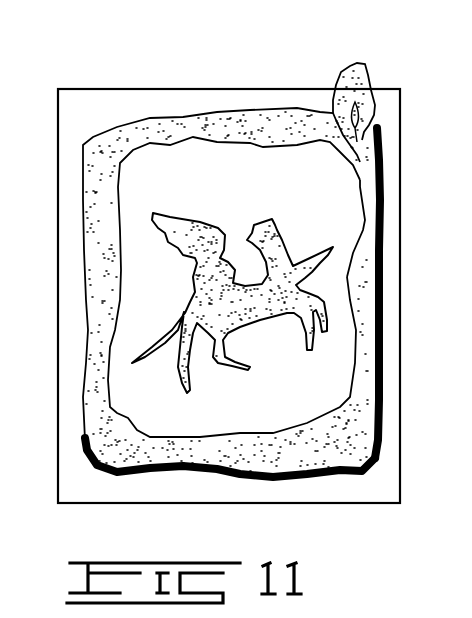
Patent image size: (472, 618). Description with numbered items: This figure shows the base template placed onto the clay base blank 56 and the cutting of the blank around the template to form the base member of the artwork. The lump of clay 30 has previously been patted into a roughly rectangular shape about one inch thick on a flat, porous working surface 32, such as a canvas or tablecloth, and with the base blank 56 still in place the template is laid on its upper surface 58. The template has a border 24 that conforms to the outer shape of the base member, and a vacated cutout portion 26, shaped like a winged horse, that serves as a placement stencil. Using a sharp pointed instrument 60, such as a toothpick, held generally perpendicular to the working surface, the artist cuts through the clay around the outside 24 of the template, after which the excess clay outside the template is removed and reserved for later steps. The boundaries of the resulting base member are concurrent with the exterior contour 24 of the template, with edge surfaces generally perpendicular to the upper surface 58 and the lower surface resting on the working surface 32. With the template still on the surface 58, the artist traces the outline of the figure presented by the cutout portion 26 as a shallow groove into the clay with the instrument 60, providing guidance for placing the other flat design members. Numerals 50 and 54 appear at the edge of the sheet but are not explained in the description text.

The border 24 is at (366, 362).
The cutout portion 26 is at (192, 233).
The lump of clay 30 is at (339, 448).
The working surface 32 is at (384, 199).
The clay base blank 56 is at (195, 130).
The upper surface 58 is at (243, 133).
The pointed instrument 60 is at (382, 153).
The adjacent figure element 50 is at (459, 470).
The adjacent figure element 54 is at (471, 503).